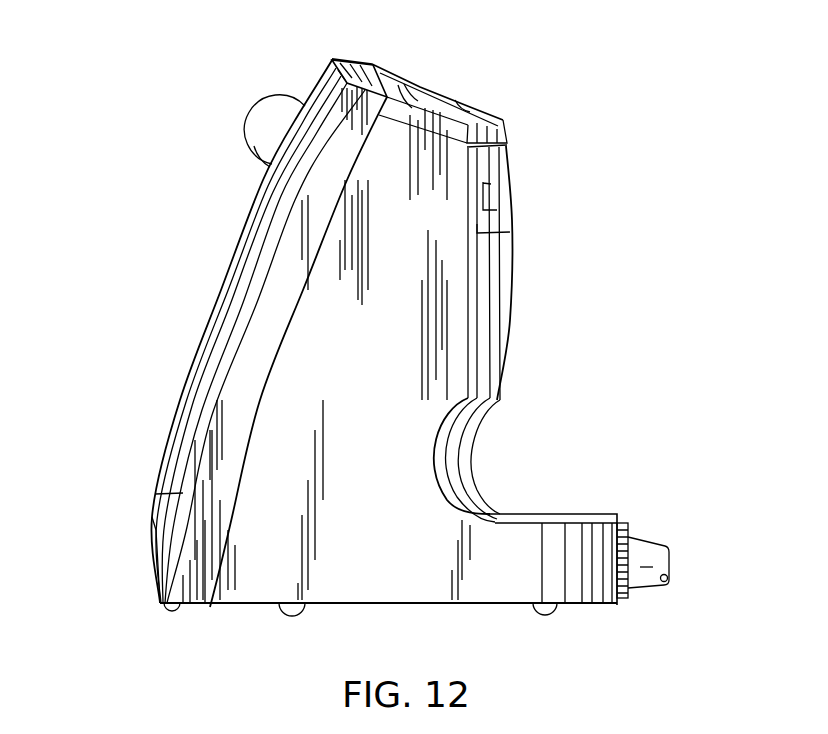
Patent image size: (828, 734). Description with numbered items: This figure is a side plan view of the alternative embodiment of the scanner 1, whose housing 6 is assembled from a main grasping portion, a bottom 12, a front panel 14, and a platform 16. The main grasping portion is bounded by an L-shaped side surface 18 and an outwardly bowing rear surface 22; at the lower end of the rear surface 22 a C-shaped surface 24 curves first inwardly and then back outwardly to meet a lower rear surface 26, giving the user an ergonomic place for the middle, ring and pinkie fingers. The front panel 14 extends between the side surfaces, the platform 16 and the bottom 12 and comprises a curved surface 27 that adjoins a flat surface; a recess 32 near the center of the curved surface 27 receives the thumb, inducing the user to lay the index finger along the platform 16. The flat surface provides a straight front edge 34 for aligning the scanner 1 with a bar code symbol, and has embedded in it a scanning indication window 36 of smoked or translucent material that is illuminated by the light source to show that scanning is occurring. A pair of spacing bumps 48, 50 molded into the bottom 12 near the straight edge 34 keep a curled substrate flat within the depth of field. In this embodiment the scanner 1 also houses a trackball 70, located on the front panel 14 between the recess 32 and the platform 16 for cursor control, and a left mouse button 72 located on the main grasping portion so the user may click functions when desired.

The scanner 1 is at (242, 624).
The housing 6 is at (520, 130).
The bottom 12 is at (267, 608).
The front panel 14 is at (317, 83).
The platform 16 is at (417, 78).
The side surface 18 is at (512, 593).
The rear surface 22 is at (490, 303).
The C-shaped surface 24 is at (463, 460).
The lower rear surface 26 is at (628, 528).
The curved surface 27 is at (190, 422).
The recess 32 is at (220, 293).
The straight front edge 34 is at (160, 604).
The scanning indication window 36 is at (153, 552).
The spacing bump 48 is at (173, 613).
The spacing bump 50 is at (200, 645).
The trackball 70 is at (262, 117).
The left mouse button 72 is at (497, 187).